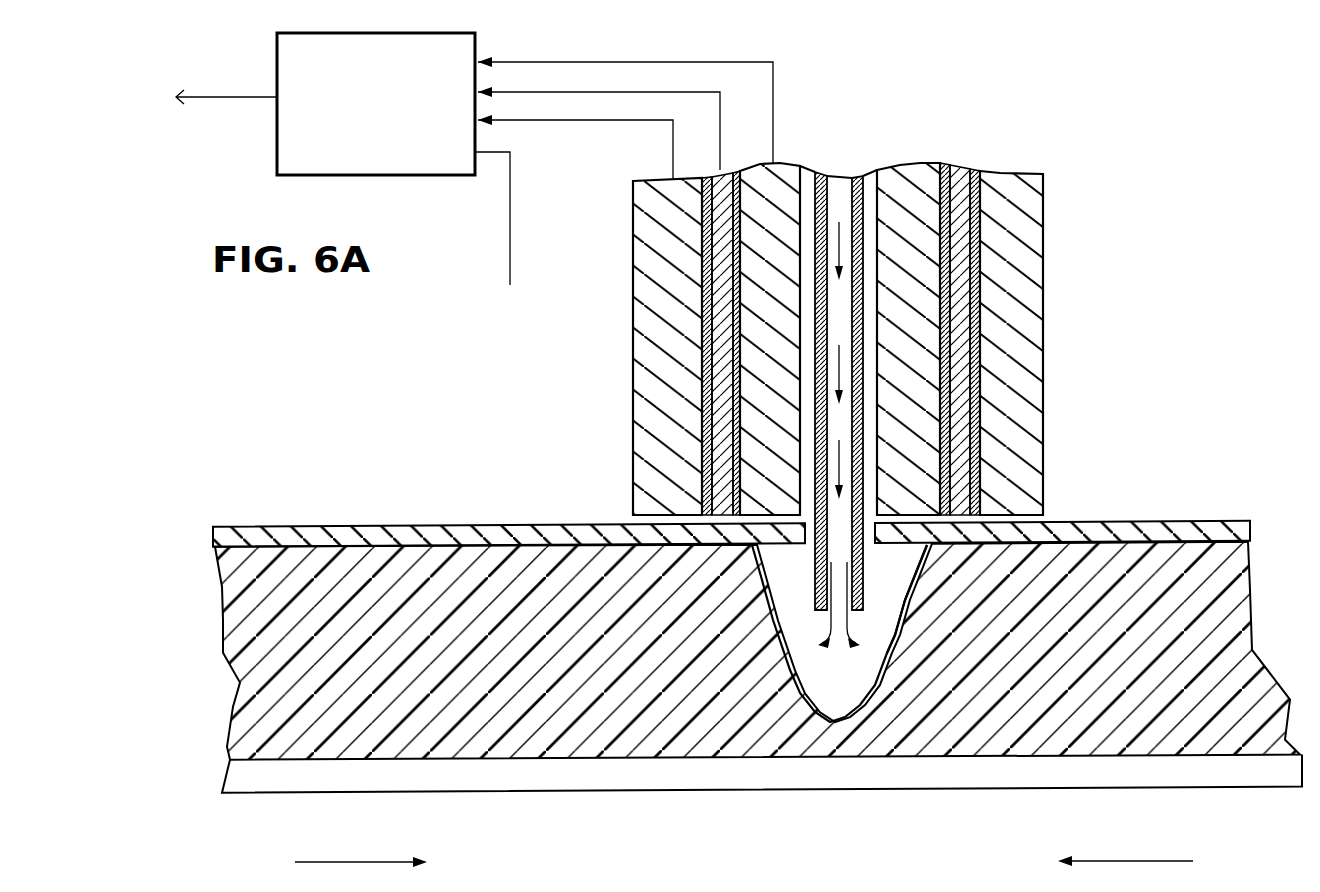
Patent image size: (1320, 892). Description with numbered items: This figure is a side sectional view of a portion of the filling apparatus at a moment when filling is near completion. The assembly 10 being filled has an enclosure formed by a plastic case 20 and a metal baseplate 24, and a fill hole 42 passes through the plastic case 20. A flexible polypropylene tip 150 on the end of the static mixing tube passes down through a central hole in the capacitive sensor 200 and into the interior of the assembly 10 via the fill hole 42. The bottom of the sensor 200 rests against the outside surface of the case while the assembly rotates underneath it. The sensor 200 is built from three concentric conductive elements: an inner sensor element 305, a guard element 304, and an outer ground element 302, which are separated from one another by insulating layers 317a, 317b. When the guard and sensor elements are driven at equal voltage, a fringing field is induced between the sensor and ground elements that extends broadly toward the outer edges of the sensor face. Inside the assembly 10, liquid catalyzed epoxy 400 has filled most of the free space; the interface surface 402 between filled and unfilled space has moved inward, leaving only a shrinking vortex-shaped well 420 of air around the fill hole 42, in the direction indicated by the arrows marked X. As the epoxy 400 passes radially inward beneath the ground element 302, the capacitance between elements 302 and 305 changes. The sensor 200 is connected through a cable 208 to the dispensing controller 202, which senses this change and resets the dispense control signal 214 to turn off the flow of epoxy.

The assembly 10 is at (236, 420).
The plastic case 20 is at (385, 528).
The metal baseplate 24 is at (1258, 779).
The fill hole 42 is at (752, 620).
The flexible polypropylene tip 150 is at (866, 178).
The capacitive sensor 200 is at (963, 365).
The dispensing controller 202 is at (277, 62).
The cable 208 is at (601, 120).
The dispense control signal 214 is at (210, 97).
The ground element 302 is at (1028, 203).
The guard element 304 is at (958, 300).
The sensor element 305 is at (910, 398).
The insulating layer 317a is at (975, 247).
The insulating layer 317b is at (945, 350).
The epoxy 400 is at (473, 575).
The interface surface 402 is at (898, 588).
The vortex-shaped well 420 is at (853, 683).